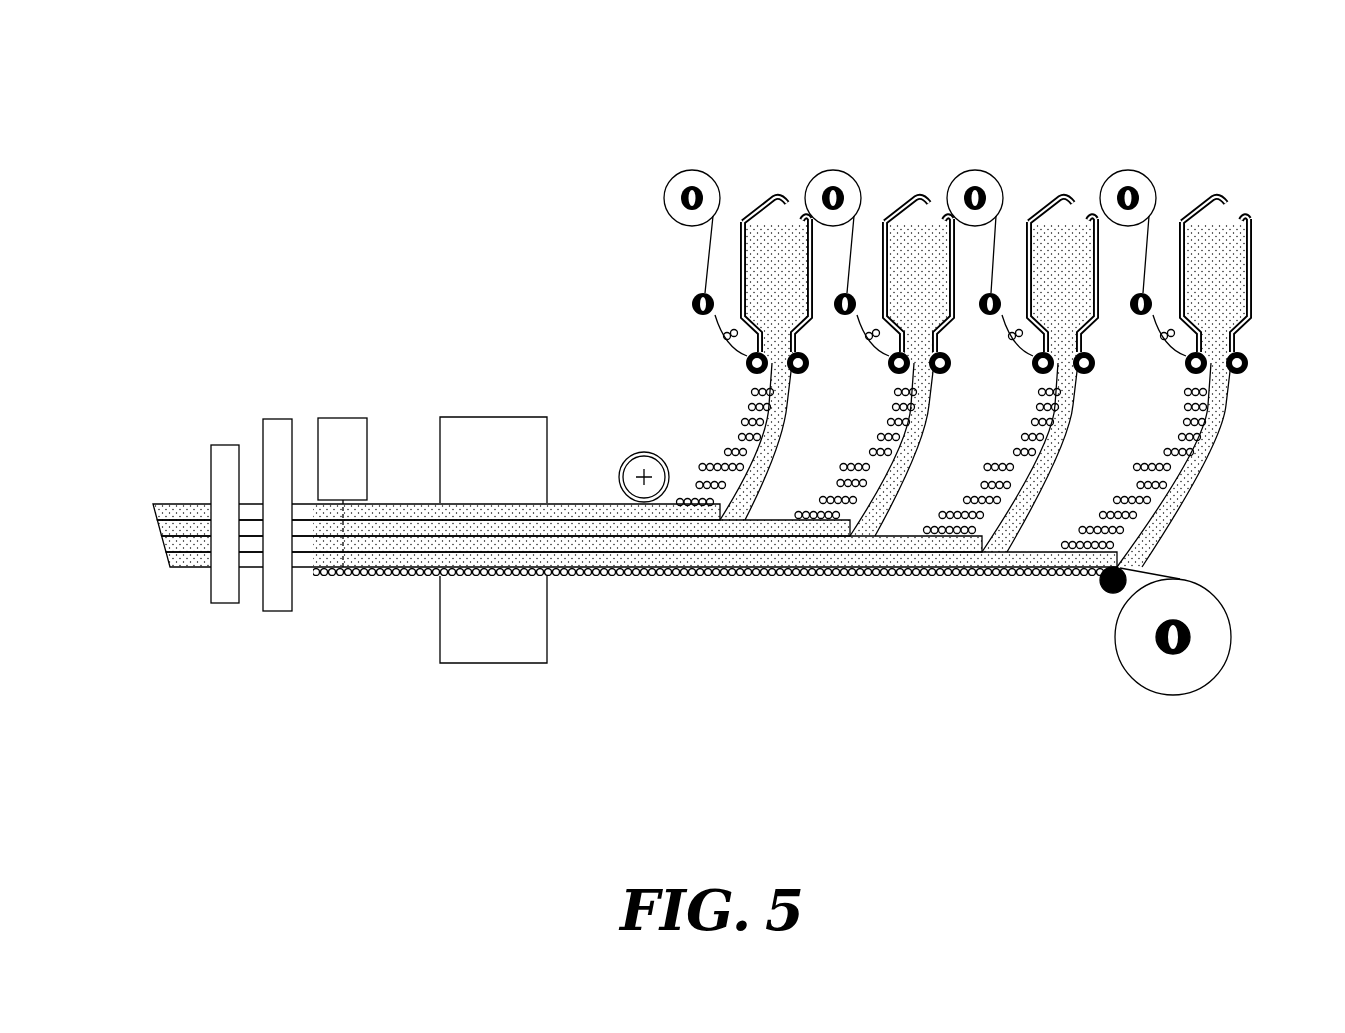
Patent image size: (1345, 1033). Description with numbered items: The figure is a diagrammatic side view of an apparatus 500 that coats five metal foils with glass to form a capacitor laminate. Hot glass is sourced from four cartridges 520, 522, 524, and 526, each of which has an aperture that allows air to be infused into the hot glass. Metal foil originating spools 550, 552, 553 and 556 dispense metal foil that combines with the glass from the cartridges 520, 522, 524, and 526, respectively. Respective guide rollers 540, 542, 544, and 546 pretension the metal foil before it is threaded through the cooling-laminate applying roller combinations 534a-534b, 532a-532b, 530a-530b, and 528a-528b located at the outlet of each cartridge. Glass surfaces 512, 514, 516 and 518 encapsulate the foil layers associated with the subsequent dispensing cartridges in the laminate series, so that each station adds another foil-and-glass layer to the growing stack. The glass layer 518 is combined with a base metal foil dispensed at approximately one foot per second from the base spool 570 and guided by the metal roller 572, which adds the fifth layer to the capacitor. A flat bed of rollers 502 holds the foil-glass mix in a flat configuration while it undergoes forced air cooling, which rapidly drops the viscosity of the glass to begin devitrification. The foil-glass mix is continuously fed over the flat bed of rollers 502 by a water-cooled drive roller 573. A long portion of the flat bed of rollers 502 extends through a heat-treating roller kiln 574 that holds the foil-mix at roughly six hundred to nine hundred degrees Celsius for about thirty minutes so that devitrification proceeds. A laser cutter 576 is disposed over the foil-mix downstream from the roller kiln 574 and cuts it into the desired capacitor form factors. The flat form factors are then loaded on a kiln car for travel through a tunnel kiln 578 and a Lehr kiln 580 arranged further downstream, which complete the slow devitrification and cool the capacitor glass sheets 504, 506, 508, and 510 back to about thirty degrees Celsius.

The apparatus 500 is at (245, 135).
The flat bed of rollers 502 is at (385, 576).
The capacitor glass sheet 504 is at (162, 487).
The capacitor glass sheet 506 is at (150, 503).
The capacitor glass sheet 508 is at (160, 553).
The capacitor glass sheet 510 is at (170, 567).
The glass surface 512 is at (780, 446).
The glass surface 514 is at (920, 446).
The glass surface 516 is at (1040, 478).
The glass layer 518 is at (1200, 484).
The cartridge 520 is at (778, 197).
The cartridge 522 is at (920, 197).
The cartridge 524 is at (1064, 197).
The cartridge 526 is at (1250, 221).
The cooling-laminate applying roller 528a is at (1192, 375).
The cooling-laminate applying roller 528b is at (1239, 375).
The cooling-laminate applying roller 530a is at (1041, 375).
The cooling-laminate applying roller 530b is at (1086, 375).
The cooling-laminate applying roller 532a is at (897, 375).
The cooling-laminate applying roller 532b is at (942, 375).
The cooling-laminate applying roller 534a is at (755, 375).
The cooling-laminate applying roller 534b is at (830, 388).
The guide roller 540 is at (709, 294).
The guide roller 542 is at (851, 294).
The guide roller 544 is at (996, 294).
The guide roller 546 is at (1147, 294).
The metal foil originating spool 550 is at (707, 172).
The metal foil originating spool 552 is at (850, 172).
The metal foil originating spool 553 is at (993, 172).
The metal foil originating spool 556 is at (1147, 176).
The base spool 570 is at (1132, 690).
The metal roller 572 is at (1100, 585).
The water-cooled drive roller 573 is at (619, 476).
The heat-treating kiln 574 is at (498, 417).
The laser cutter 576 is at (350, 418).
The tunnel kiln 578 is at (283, 419).
The Lehr kiln 580 is at (222, 445).